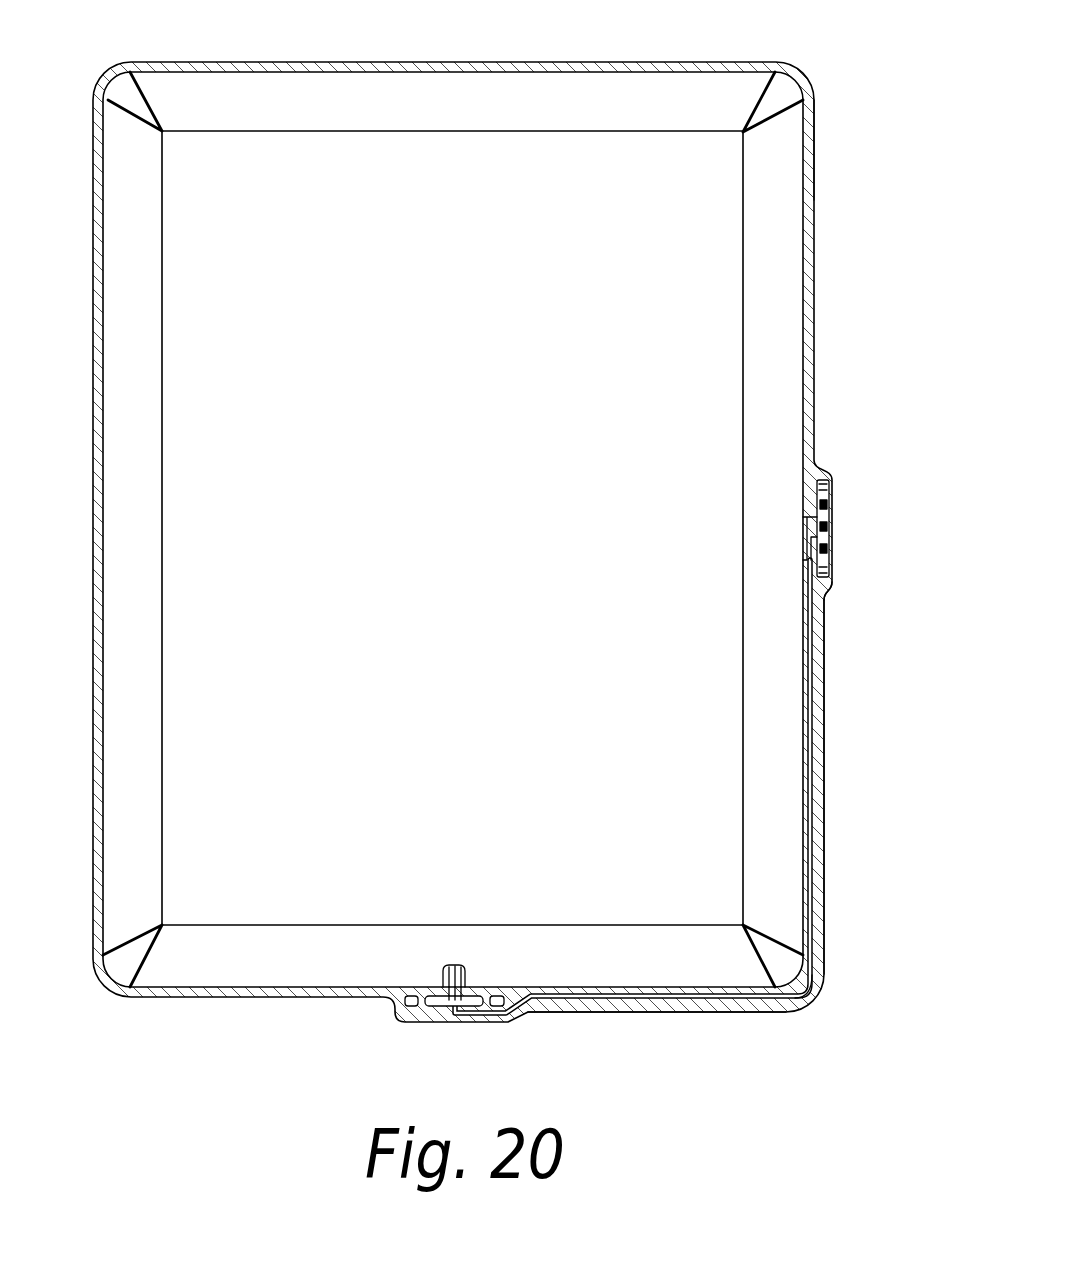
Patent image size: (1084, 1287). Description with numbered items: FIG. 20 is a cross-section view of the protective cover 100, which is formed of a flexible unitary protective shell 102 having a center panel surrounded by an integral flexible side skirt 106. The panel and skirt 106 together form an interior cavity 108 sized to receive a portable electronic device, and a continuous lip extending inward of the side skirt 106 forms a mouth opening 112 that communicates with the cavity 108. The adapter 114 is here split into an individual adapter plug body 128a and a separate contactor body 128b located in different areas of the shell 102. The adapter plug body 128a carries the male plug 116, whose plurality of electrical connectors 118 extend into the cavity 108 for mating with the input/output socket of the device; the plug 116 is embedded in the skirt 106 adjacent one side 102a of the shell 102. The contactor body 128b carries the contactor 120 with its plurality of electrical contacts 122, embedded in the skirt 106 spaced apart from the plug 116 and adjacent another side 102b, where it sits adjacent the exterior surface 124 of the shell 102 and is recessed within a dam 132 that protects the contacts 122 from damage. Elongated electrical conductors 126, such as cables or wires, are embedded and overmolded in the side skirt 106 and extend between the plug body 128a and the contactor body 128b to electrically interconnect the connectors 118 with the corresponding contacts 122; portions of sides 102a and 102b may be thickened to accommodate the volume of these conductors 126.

The protective cover 100 is at (507, 554).
The protective shell 102 is at (578, 62).
The side of protective shell 102a is at (712, 1012).
The side of protective shell 102b is at (822, 855).
The side skirt 106 is at (140, 205).
The interior cavity 108 is at (498, 525).
The mouth opening 112 is at (800, 185).
The adapter 114 is at (445, 1005).
The male plug 116 is at (462, 965).
The electrical connectors 118 is at (459, 965).
The contactor 120 is at (830, 556).
The electrical contacts 122 is at (828, 548).
The exterior surface of shell 124 is at (826, 718).
The electrical conductors 126 is at (816, 1000).
The adapter plug body 128a is at (420, 1003).
The contactor body 128b is at (820, 478).
The dam 132 is at (826, 590).